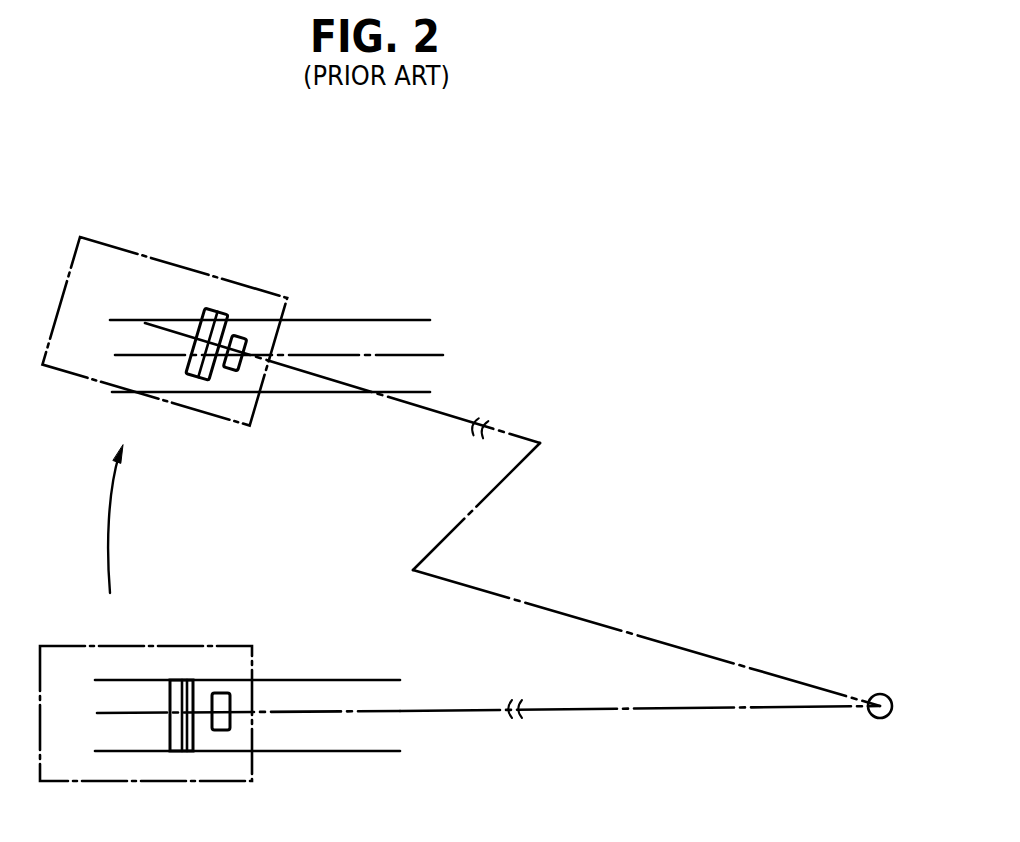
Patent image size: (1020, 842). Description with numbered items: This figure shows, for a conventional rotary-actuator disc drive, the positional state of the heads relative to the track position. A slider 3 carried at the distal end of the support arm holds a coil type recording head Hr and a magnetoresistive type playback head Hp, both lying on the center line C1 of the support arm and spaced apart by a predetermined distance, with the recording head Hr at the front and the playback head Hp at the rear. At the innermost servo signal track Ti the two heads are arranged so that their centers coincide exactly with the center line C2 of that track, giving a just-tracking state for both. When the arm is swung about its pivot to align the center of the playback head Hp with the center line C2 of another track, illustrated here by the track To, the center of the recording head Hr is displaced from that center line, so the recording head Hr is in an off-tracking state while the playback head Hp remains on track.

The slider 3 is at (130, 252).
The recording head Hr is at (212, 309).
The playback head Hp is at (250, 336).
The tape (outgoing side) in tilted position To is at (350, 319).
The innermost servo signal track Ti is at (302, 679).
The center line of the support arm C1 is at (618, 630).
The center line of the track C2 is at (383, 351).